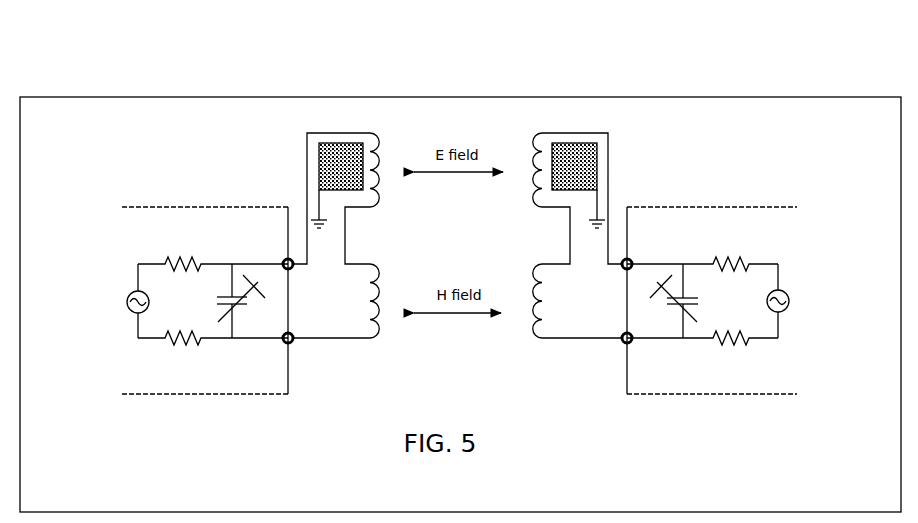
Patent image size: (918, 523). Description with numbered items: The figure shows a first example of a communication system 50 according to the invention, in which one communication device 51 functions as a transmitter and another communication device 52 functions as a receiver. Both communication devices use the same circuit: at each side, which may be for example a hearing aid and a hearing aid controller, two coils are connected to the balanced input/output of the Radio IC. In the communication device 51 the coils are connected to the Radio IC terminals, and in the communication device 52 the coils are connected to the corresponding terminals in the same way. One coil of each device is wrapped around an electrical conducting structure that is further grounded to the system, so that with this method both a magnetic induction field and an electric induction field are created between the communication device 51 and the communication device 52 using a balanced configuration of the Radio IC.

The NFC communication system with two antenna circuits 50 is at (260, 74).
The communication device 51 is at (222, 185).
The communication device 52 is at (777, 174).